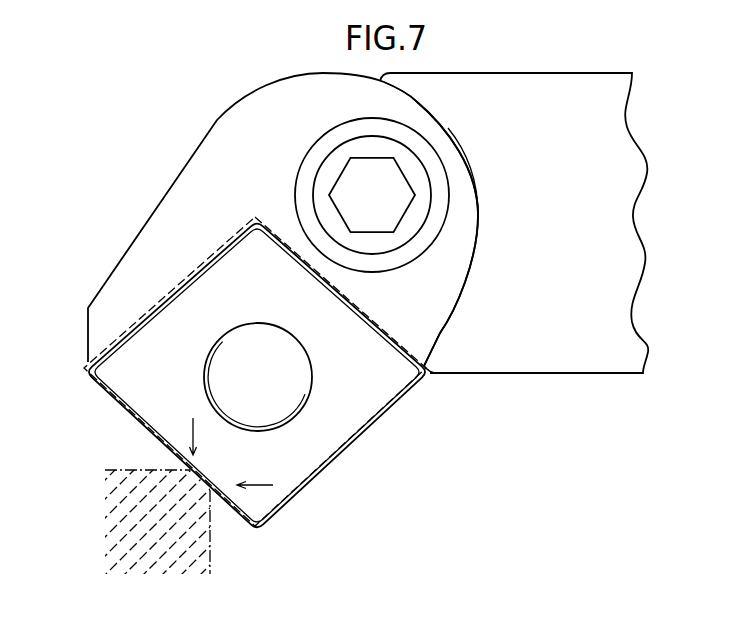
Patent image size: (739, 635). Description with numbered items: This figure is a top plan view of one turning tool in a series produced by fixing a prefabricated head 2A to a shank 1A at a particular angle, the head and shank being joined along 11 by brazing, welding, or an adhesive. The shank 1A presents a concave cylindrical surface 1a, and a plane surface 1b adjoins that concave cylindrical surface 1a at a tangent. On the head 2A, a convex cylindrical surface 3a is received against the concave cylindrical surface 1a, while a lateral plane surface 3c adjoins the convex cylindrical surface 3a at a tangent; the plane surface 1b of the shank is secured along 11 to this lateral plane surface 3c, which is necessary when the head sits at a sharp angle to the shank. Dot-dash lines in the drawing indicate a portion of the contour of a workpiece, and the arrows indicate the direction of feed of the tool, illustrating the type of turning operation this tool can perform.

The head 2A is at (259, 106).
The shank 1A is at (557, 92).
The concave cylindrical surface 1a is at (440, 122).
The joint line 11 is at (478, 201).
The convex cylindrical surface 3a is at (416, 103).
The lateral plane surface 3c is at (433, 342).
The plane surface 1b is at (440, 337).